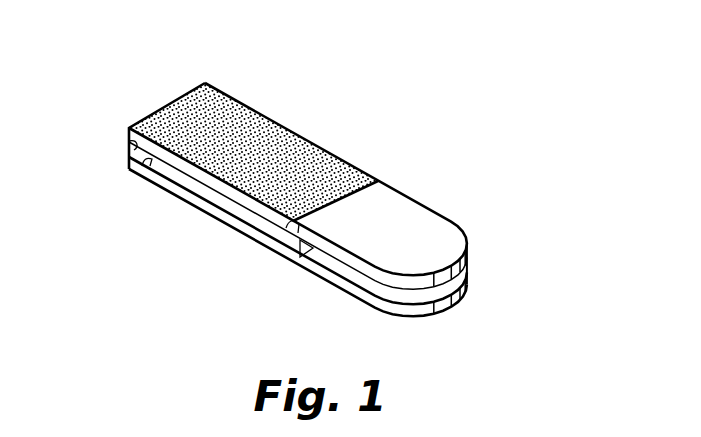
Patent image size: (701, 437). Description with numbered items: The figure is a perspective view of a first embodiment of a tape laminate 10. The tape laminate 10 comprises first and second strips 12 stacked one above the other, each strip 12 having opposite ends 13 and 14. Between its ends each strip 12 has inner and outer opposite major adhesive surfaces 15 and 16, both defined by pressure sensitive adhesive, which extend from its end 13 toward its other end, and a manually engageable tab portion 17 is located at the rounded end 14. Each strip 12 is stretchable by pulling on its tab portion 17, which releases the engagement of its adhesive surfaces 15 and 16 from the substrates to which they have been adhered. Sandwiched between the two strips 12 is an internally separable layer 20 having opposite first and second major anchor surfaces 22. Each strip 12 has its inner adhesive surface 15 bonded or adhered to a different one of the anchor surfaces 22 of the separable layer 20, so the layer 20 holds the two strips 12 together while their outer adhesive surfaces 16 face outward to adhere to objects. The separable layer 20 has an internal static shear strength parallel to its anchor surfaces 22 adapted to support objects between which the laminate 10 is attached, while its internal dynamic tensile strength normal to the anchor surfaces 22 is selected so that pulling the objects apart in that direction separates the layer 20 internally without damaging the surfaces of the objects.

The tape laminate 10 is at (315, 53).
The strip 12 is at (388, 182).
The end 13 is at (158, 104).
The end 14 is at (467, 270).
The inner adhesive surface 15 is at (130, 147).
The outer adhesive surface 16 is at (266, 128).
The tab portion 17 is at (447, 240).
The separable layer 20 is at (281, 229).
The anchor surface 22 is at (193, 196).